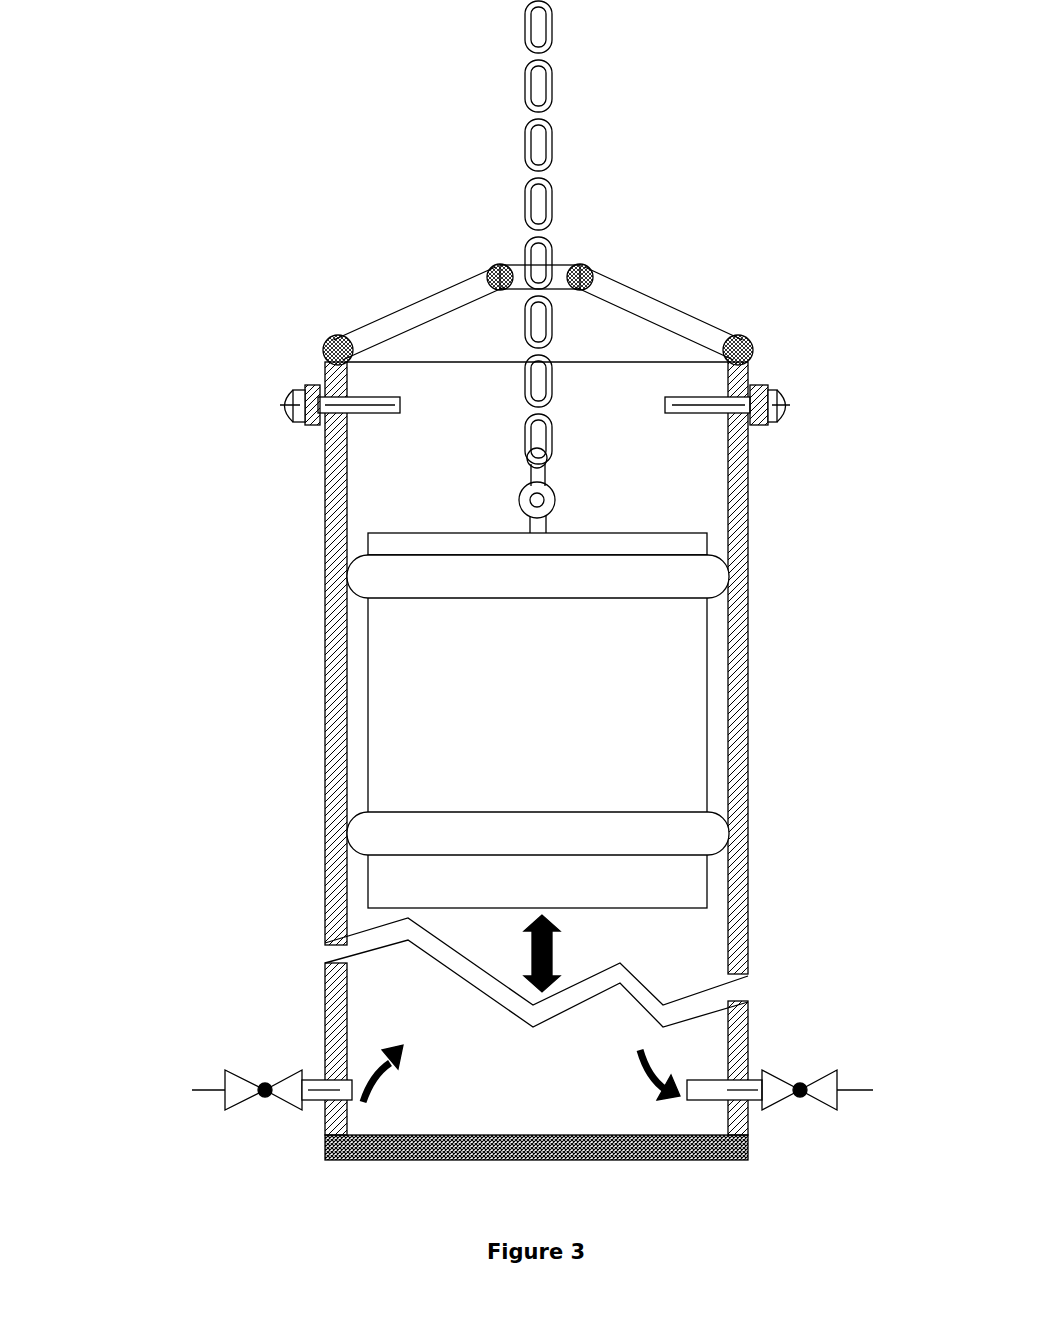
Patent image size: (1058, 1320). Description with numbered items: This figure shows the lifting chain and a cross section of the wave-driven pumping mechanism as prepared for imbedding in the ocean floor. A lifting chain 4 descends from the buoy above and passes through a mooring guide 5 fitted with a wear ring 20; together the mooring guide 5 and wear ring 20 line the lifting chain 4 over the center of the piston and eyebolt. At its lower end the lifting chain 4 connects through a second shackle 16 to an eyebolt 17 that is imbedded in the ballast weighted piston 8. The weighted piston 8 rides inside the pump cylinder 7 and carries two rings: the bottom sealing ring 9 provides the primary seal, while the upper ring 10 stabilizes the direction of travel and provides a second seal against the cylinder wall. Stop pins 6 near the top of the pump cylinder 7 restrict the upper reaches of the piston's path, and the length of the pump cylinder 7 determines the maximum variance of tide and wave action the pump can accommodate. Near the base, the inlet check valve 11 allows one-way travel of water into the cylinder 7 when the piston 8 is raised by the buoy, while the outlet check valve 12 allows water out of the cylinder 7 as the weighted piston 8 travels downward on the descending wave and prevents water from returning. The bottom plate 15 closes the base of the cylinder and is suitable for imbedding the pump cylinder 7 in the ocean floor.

The lifting chain 4 is at (527, 140).
The mooring guide 5 is at (418, 297).
The wear ring 20 is at (588, 262).
The stop pins 6 is at (276, 397).
The pump cylinder 7 is at (325, 528).
The ballast weighted piston 8 is at (367, 680).
The sealing ring 9 is at (395, 830).
The upper ring 10 is at (680, 580).
The second shackle 16 is at (553, 472).
The eyebolt 17 is at (556, 505).
The inlet check valve 11 is at (218, 1082).
The outlet check valve 12 is at (837, 1080).
The bottom plate 15 is at (345, 1165).